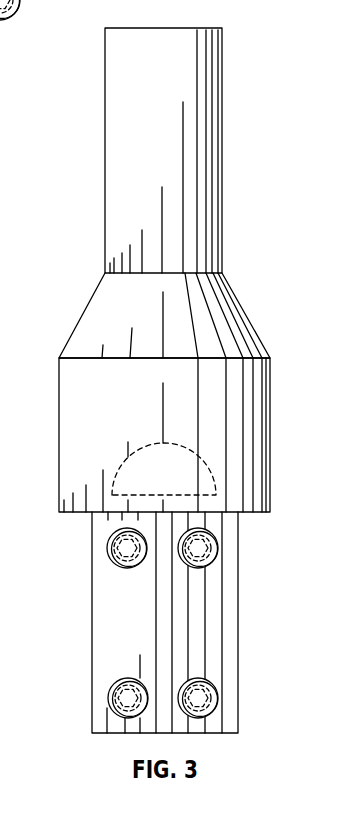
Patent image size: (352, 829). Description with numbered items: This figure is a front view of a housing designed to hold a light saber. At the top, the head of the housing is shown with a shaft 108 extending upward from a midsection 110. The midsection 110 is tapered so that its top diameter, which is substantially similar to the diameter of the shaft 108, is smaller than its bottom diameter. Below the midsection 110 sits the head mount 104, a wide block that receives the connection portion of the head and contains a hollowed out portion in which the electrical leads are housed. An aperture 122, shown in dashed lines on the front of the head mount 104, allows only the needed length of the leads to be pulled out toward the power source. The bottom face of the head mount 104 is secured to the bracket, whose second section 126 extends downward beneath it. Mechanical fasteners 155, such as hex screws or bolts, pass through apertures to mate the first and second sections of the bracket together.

The shaft 108 is at (202, 183).
The midsection 110 is at (230, 323).
The head mount 104 is at (250, 398).
The aperture 122 is at (193, 472).
The mechanical fasteners 155 is at (210, 548).
The second section 126 is at (217, 633).